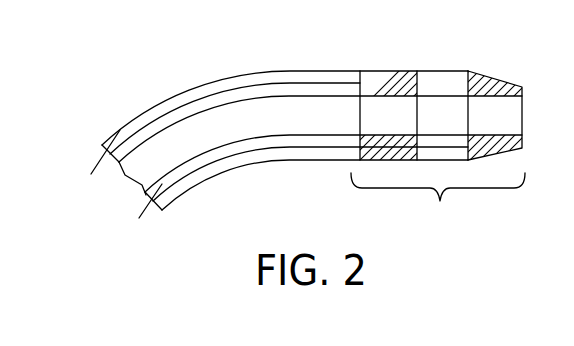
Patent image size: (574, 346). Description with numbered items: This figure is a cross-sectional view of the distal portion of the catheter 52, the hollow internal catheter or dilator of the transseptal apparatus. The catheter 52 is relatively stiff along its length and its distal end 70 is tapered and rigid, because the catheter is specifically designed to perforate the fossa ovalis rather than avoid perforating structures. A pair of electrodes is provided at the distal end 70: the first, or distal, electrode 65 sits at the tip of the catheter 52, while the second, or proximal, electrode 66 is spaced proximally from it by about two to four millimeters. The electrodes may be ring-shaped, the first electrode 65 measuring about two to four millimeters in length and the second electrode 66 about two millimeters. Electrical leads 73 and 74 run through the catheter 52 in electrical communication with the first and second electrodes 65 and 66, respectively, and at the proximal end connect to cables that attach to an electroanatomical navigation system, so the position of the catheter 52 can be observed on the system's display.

The catheter 52 is at (188, 89).
The electrical lead 74 is at (95, 170).
The electrical lead 73 is at (142, 212).
The second electrode 66 is at (390, 70).
The first electrode 65 is at (492, 77).
The distal end 70 is at (432, 127).